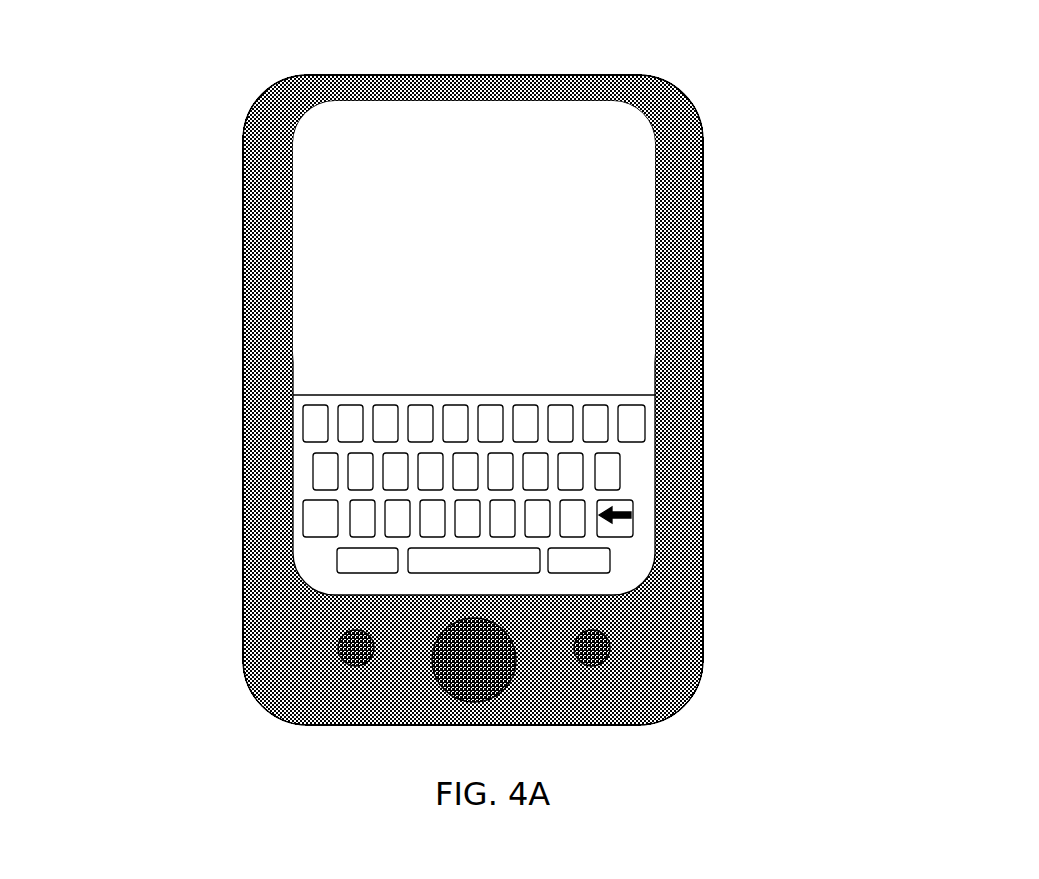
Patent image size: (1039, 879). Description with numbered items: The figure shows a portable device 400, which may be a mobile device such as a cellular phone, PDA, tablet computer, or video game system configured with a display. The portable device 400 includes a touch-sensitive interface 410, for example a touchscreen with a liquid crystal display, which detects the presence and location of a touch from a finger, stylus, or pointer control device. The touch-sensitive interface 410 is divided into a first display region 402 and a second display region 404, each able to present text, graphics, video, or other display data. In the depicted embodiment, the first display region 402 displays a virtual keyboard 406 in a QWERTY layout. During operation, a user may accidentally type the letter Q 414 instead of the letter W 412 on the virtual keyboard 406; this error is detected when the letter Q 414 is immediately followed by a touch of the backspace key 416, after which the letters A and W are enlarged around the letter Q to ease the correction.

The portable device 400 is at (880, 70).
The first display region 402 is at (475, 409).
The second display region 404 is at (620, 297).
The virtual keyboard 406 is at (632, 412).
The touch-sensitive interface 410 is at (892, 430).
The letter W 412 is at (333, 407).
The letter Q 414 is at (302, 430).
The backspace key 416 is at (632, 525).